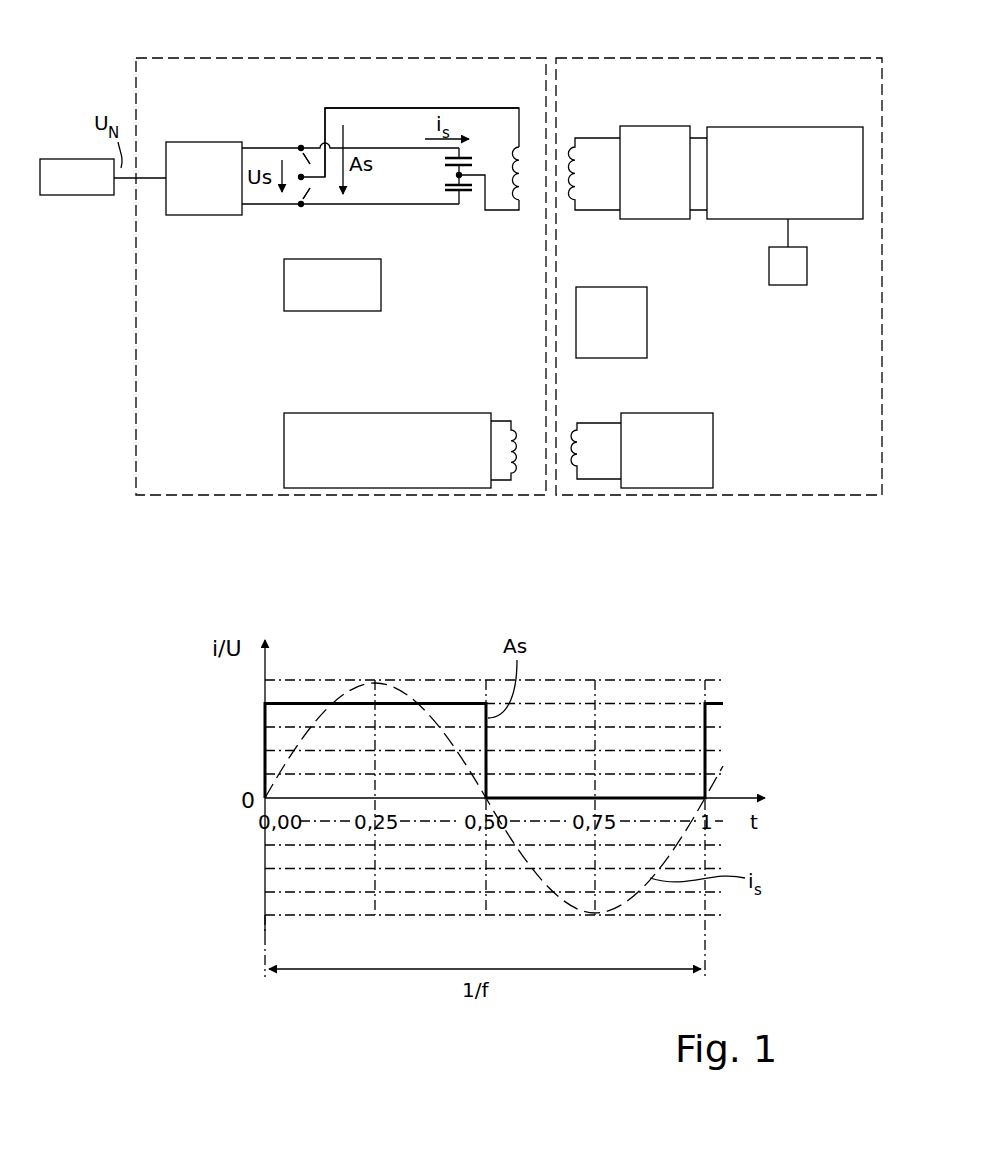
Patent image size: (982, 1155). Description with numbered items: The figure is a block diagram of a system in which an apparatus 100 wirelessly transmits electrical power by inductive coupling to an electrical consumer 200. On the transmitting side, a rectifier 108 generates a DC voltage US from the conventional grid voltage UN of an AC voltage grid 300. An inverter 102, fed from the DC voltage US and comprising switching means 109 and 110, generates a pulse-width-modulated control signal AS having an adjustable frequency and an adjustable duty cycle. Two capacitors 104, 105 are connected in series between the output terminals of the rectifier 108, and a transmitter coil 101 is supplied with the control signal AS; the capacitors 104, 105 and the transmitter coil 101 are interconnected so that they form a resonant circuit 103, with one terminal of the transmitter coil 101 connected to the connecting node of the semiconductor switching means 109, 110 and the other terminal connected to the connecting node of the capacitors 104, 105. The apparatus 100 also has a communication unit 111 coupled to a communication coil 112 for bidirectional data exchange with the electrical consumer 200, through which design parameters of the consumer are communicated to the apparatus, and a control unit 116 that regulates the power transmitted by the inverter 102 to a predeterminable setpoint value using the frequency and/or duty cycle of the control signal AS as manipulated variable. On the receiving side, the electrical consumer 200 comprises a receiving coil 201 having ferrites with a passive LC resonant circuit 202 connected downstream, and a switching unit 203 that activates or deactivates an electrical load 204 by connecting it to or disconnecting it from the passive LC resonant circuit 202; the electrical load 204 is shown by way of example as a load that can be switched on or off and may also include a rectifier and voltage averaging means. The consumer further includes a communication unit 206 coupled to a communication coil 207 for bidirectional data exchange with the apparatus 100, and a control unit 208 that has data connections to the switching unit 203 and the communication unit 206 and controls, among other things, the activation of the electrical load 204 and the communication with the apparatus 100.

The apparatus 100 is at (367, 57).
The electrical consumer 200 is at (690, 57).
The AC voltage grid 300 is at (77, 177).
The transmitter coil 101 is at (521, 143).
The inverter 102 is at (303, 133).
The resonant circuit 103 is at (412, 98).
The capacitor 104 is at (428, 161).
The capacitor 105 is at (428, 189).
The rectifier 108 is at (204, 178).
The switching means 109 is at (306, 162).
The switching means 110 is at (306, 200).
The communication unit 111 is at (387, 450).
The communication coil 112 is at (517, 468).
The control unit 116 is at (332, 285).
The receiving coil 201 is at (573, 140).
The passive LC resonant circuit 202 is at (655, 172).
The switching unit 203 is at (785, 173).
The electrical load 204 is at (786, 272).
The communication unit 206 is at (667, 450).
The communication coil 207 is at (578, 462).
The control unit 208 is at (611, 322).